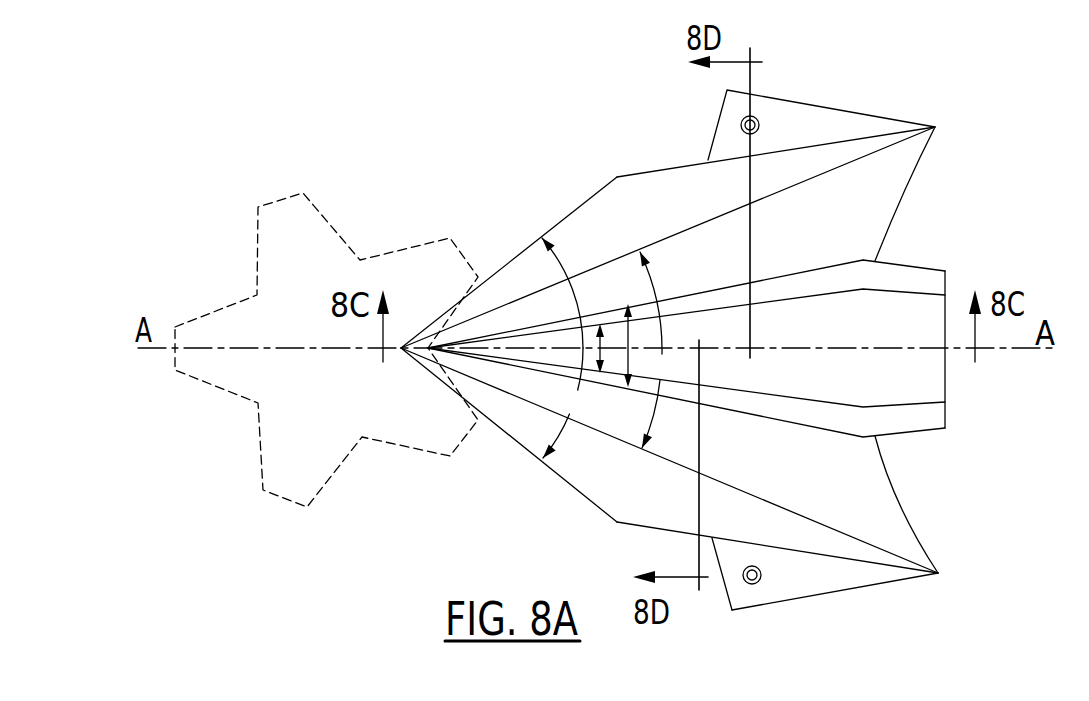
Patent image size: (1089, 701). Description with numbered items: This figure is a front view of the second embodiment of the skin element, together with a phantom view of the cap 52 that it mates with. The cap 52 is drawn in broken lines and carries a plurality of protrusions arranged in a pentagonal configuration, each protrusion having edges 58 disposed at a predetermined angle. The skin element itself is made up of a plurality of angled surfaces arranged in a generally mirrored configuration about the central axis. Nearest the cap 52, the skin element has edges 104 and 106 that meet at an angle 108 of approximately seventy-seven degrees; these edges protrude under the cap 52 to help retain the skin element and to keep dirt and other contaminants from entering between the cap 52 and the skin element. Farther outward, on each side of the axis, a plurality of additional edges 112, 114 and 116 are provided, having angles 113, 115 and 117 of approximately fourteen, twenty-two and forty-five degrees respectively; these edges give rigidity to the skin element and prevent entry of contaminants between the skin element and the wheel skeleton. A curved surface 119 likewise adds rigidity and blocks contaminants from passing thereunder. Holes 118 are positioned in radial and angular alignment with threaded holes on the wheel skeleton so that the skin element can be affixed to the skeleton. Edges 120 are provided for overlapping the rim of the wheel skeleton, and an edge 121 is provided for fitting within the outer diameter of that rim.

The cap 52 is at (303, 447).
The edges 58 is at (350, 210).
The edge 104 is at (553, 470).
The edge 106 is at (584, 202).
The angle 108 is at (570, 403).
The additional edges 112 is at (832, 308).
The angle 113 is at (542, 238).
The additional edges 114 is at (797, 266).
The angle 115 is at (642, 448).
The additional edges 116 is at (848, 176).
The angle 117 is at (660, 350).
The holes 118 is at (779, 115).
The curved surface 119 is at (913, 505).
The edges 120 is at (952, 579).
The edge 121 is at (962, 369).